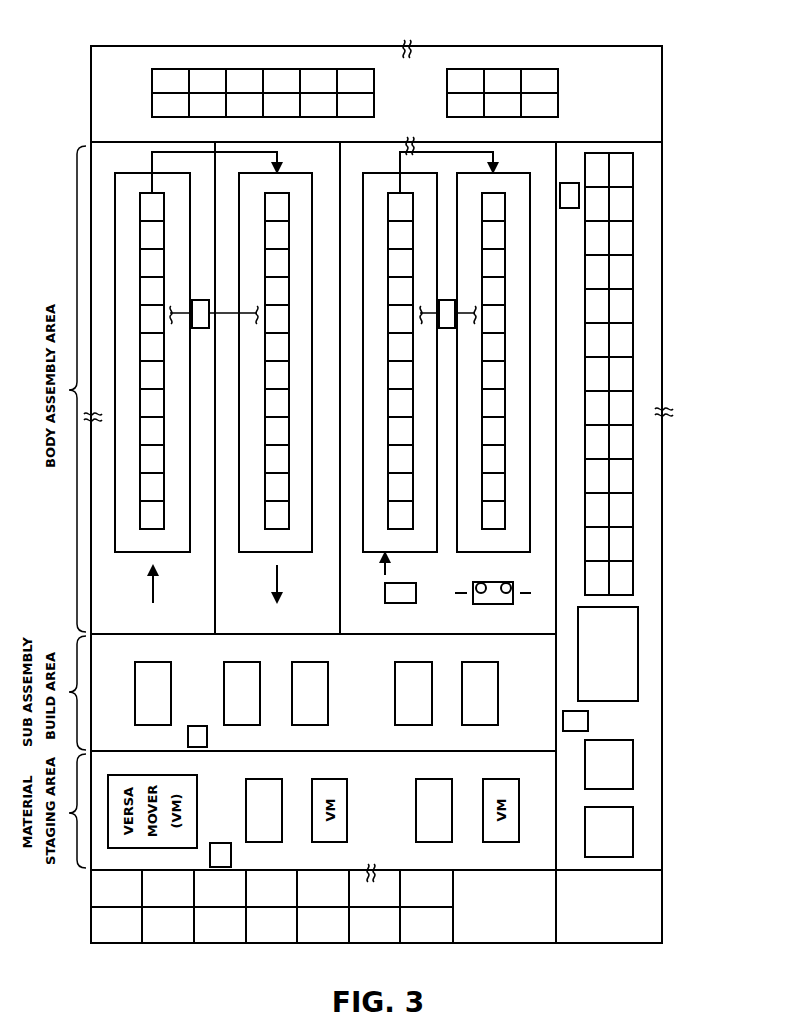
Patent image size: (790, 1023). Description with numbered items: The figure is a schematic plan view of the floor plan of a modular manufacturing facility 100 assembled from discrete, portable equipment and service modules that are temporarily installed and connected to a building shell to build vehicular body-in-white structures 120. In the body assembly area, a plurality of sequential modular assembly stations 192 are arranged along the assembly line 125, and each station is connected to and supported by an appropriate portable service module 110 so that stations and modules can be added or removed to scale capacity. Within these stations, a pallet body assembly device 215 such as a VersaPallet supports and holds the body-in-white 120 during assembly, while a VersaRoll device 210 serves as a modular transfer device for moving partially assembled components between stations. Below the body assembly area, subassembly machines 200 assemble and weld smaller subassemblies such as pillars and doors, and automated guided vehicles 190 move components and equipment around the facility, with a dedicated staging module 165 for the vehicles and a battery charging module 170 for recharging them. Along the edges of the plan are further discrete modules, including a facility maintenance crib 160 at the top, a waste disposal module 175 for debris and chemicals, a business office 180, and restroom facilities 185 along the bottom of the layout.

The modular manufacturing facility 100 is at (680, 107).
The facility maintenance crib 160 is at (281, 70).
The pallet body assembly device 215 is at (375, 204).
The VersaRoll device 210 is at (518, 222).
The modular assembly station 192 is at (150, 238).
The service module 110 is at (200, 300).
The assembly line 125 is at (165, 152).
The vehicular body-in-white structure 120 is at (400, 603).
The automated guided vehicle 190 is at (568, 183).
The subassembly machine 200 is at (171, 688).
The automated guided vehicle staging module 165 is at (647, 716).
The battery charging module 170 is at (624, 842).
The business office 180 is at (169, 934).
The restroom facilities 185 is at (503, 924).
The waste disposal module 175 is at (626, 904).